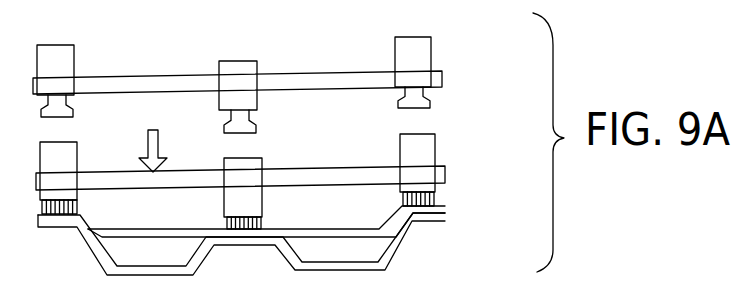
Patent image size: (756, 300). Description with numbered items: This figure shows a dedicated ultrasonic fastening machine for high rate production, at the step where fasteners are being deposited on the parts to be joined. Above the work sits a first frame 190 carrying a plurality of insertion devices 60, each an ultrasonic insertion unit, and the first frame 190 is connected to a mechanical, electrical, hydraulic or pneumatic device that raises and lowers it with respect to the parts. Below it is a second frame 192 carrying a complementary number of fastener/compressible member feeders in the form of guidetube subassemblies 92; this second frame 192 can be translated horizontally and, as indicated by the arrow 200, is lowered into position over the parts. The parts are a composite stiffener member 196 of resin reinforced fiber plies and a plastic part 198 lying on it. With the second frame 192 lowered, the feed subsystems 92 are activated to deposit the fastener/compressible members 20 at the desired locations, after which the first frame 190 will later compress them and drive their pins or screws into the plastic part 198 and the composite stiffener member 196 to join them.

The insertion device 60 is at (75, 64).
The first frame 190 is at (315, 73).
The guidetube subassembly 92 is at (78, 158).
The second frame 192 is at (330, 167).
The arrow 200 is at (160, 143).
The fastener/compressible member 20 is at (78, 208).
The plastic part 198 is at (445, 206).
The composite stiffener member 196 is at (445, 221).